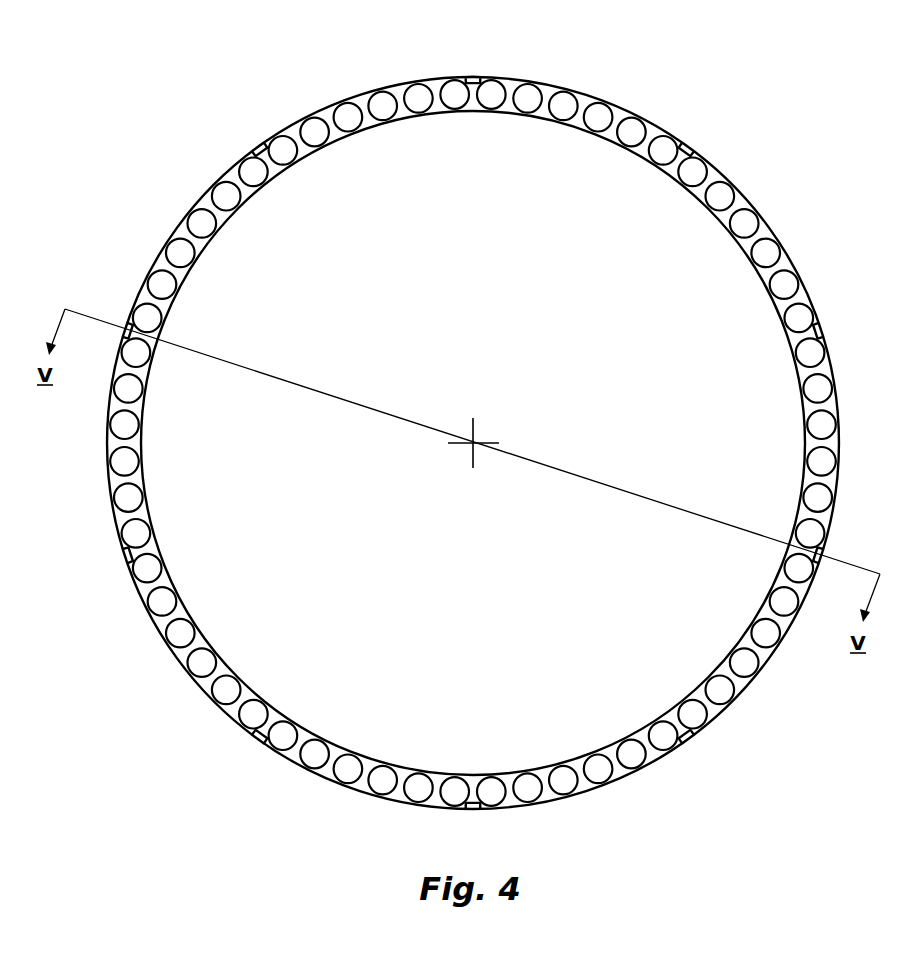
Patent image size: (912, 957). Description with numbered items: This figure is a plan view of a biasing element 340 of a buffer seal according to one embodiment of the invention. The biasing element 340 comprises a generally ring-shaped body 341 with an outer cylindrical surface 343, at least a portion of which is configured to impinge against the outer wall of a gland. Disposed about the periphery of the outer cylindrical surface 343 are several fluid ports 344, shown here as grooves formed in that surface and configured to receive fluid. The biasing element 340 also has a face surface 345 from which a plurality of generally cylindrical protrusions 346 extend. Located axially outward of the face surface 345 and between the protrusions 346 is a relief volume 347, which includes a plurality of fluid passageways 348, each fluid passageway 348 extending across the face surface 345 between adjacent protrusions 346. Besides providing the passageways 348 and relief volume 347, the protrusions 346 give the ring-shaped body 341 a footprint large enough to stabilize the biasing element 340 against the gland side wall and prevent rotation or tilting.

The biasing element 340 is at (210, 148).
The ring-shaped body 341 is at (166, 260).
The outer cylindrical surface 343 is at (185, 220).
The fluid port 344 is at (478, 72).
The face surface 345 is at (618, 772).
The protrusion 346 is at (747, 220).
The relief volume 347 is at (713, 172).
The fluid passageway 348 is at (322, 112).